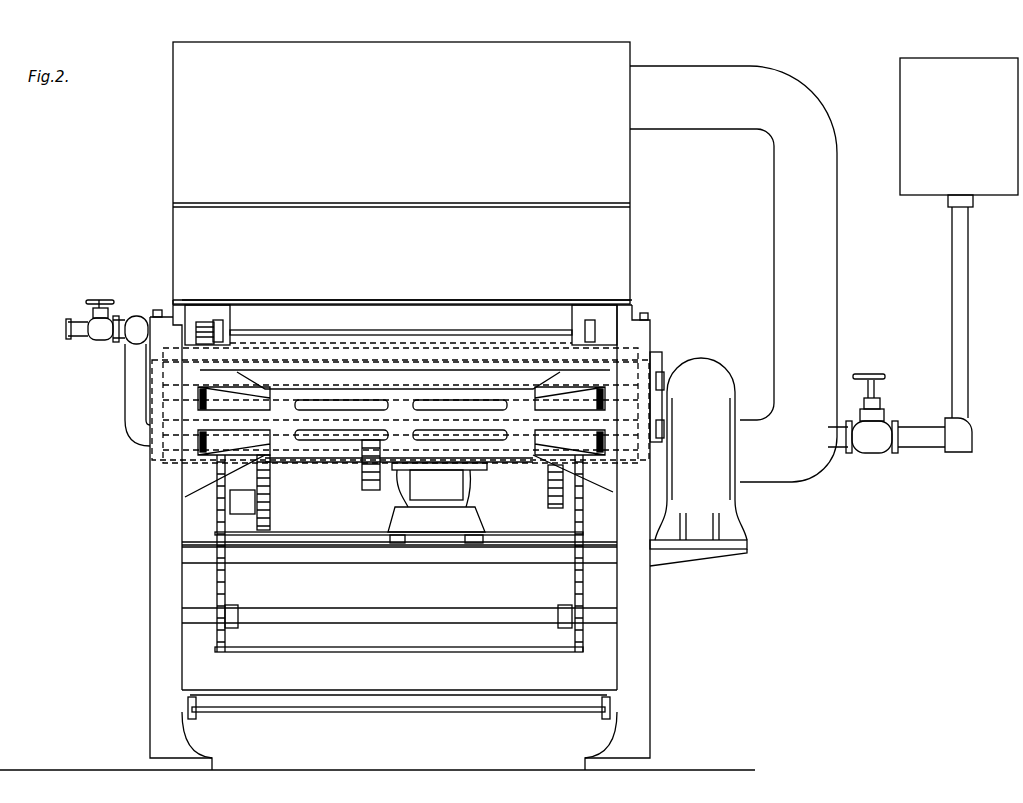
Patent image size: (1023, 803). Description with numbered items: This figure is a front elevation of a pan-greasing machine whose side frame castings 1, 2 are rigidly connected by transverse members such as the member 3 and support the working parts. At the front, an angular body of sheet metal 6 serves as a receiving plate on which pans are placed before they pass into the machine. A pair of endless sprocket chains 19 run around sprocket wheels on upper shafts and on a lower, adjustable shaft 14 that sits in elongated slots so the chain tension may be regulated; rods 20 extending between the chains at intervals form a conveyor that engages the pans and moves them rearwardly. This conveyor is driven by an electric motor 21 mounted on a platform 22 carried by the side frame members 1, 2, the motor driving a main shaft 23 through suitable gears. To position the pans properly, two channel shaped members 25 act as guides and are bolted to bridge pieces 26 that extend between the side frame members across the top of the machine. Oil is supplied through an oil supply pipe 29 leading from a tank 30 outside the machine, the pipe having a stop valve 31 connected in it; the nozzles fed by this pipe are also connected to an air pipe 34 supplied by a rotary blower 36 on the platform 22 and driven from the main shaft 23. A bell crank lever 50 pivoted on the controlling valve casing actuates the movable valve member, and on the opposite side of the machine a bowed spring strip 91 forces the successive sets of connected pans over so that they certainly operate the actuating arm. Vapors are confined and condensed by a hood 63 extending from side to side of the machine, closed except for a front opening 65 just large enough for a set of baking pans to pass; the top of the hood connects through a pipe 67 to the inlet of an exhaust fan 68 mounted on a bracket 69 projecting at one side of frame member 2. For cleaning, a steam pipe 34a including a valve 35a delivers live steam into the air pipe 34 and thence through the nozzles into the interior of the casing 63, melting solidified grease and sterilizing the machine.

The side frame casting 1 is at (153, 575).
The side frame casting 2 is at (640, 608).
The transverse member 3 is at (390, 704).
The angular body of sheet metal 6 is at (424, 346).
The shaft 14 is at (494, 617).
The endless sprocket chain 19 is at (584, 346).
The rod 20 is at (402, 658).
The electric motor 21 is at (462, 490).
The platform 22 is at (432, 560).
The main shaft 23 is at (318, 462).
The channel shaped member 25 is at (232, 319).
The bridge piece 26 is at (401, 322).
The oil supply pipe 29 is at (966, 277).
The tank 30 is at (955, 64).
The stop valve 31 is at (880, 427).
The air pipe 34 is at (128, 403).
The pipe 34a is at (74, 327).
The valve 35a is at (108, 341).
The rotary blower 36 is at (200, 497).
The bell crank lever 50 is at (658, 376).
The hood 63 is at (173, 150).
The opening 65 is at (480, 318).
The pipe 67 is at (832, 287).
The exhaust fan 68 is at (708, 366).
The bracket 69 is at (700, 554).
The bowed spring strip 91 is at (398, 406).